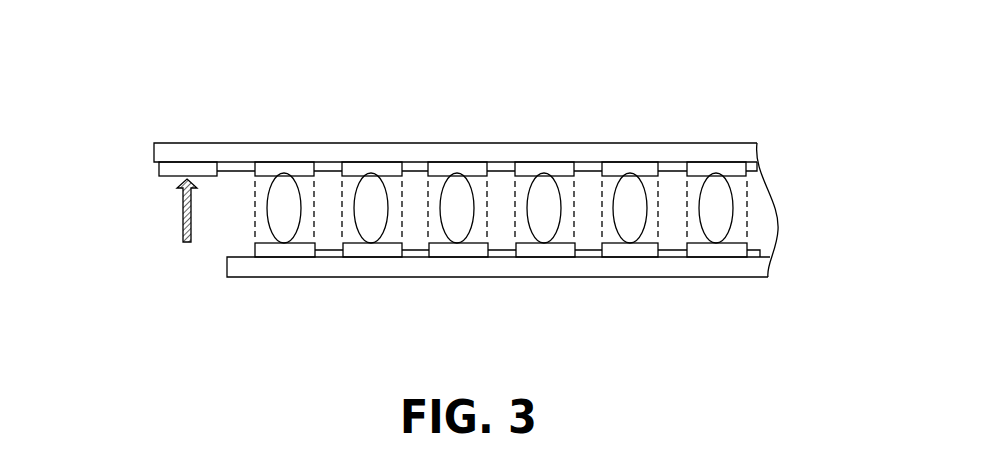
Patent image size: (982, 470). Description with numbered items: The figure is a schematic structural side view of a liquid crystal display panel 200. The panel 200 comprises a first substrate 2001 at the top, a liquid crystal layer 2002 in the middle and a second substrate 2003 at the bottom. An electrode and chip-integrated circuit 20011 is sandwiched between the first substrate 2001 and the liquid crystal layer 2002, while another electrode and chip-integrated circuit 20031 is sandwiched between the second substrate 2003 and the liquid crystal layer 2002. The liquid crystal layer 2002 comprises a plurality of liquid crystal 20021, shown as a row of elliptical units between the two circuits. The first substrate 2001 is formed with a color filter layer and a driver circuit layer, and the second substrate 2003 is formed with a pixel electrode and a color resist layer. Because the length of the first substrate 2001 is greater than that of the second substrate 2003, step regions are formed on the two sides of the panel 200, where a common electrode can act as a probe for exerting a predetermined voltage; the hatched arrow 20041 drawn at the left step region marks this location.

The liquid crystal display panel 200 is at (462, 164).
The first substrate 2001 is at (730, 147).
The electrode and chip-integrated circuit 20011 is at (157, 170).
The liquid crystal layer 2002 is at (583, 168).
The liquid crystal 20021 is at (633, 197).
The second substrate 2003 is at (753, 267).
The electrode and chip-integrated circuit 20031 is at (258, 244).
The incident light direction 20041 is at (183, 208).